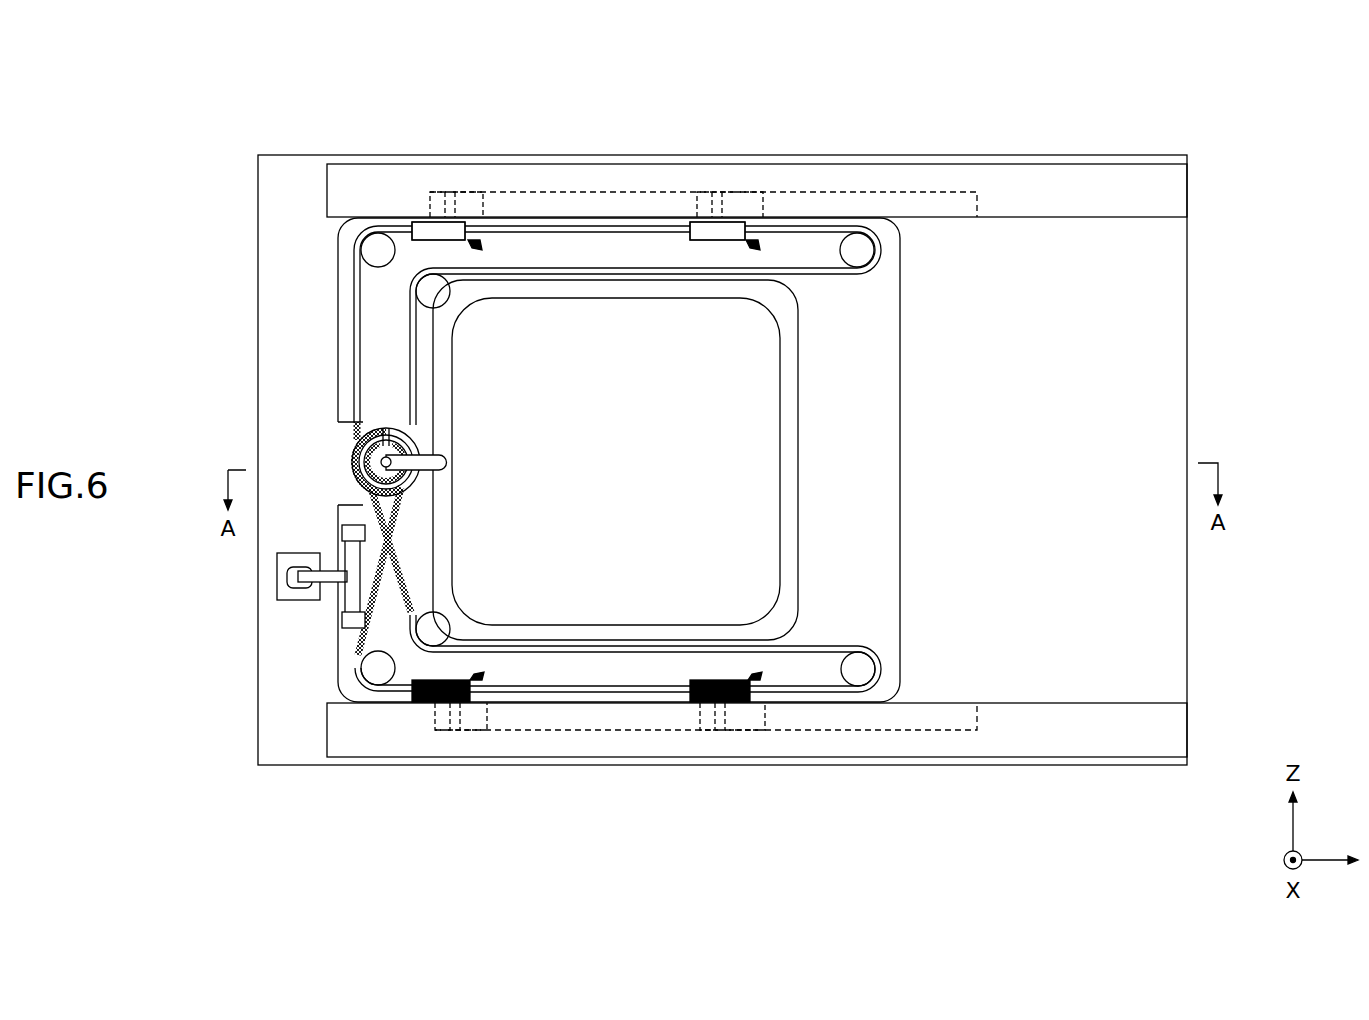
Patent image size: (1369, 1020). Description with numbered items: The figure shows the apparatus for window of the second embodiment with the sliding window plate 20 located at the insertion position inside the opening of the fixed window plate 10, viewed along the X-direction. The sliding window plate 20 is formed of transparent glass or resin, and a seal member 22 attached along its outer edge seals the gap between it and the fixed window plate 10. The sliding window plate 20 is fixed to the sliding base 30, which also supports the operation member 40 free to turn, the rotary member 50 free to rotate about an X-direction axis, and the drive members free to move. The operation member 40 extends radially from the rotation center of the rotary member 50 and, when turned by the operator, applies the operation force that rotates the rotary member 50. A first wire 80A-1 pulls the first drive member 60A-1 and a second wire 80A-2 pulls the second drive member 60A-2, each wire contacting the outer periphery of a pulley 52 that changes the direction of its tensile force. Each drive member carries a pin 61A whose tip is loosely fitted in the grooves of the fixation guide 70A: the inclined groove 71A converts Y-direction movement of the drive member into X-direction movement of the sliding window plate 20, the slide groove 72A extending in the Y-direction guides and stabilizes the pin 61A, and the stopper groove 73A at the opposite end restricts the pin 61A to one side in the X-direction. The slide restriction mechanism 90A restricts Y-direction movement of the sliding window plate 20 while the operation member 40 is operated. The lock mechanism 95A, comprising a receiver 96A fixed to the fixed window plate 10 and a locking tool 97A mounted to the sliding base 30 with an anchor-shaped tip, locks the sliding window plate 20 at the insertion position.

The fixed window plate 10 is at (1180, 408).
The sliding window plate 20 is at (765, 568).
The seal member 22 is at (790, 595).
The sliding base 30 is at (880, 334).
The operation member 40 is at (430, 455).
The rotary member 50 is at (356, 490).
The pulley 52 is at (845, 232).
The first drive member 60A-1 is at (474, 243).
The second drive member 60A-2 is at (480, 676).
The pin 61A is at (398, 218).
The fixation guide 70A is at (1180, 191).
The inclined groove 71A is at (468, 220).
The slide groove 72A is at (596, 190).
The stopper groove 73A is at (447, 185).
The first wire 80A-1 is at (832, 273).
The second wire 80A-2 is at (840, 645).
The slide restriction mechanism 90A is at (345, 455).
The lock mechanism 95A is at (240, 581).
The receiver 96A is at (289, 553).
The locking tool 97A is at (325, 598).